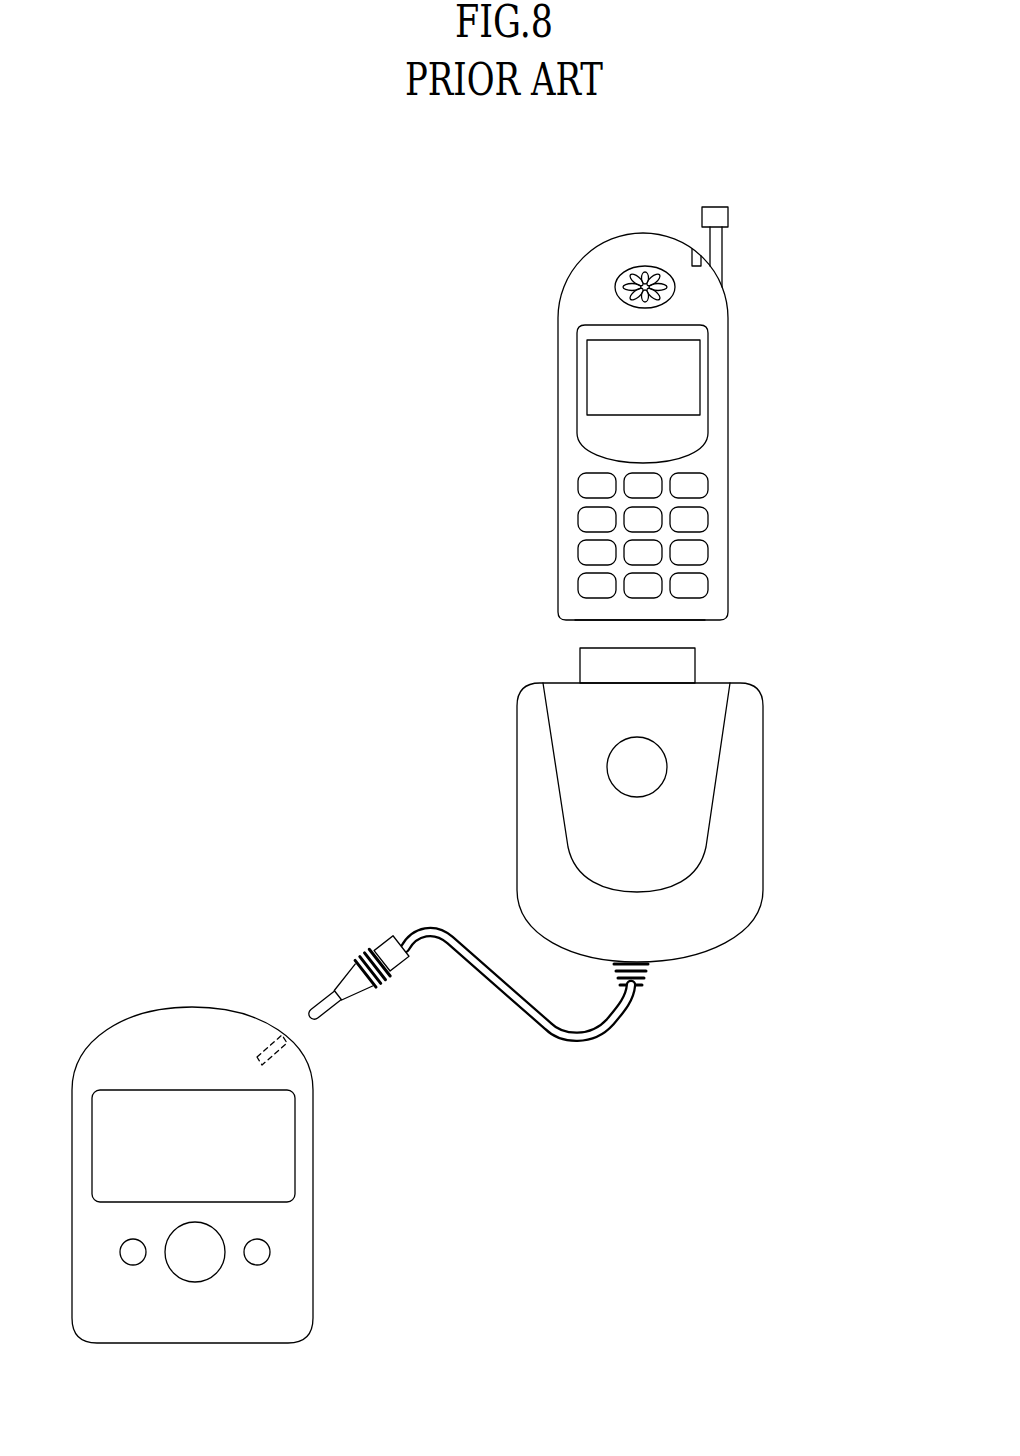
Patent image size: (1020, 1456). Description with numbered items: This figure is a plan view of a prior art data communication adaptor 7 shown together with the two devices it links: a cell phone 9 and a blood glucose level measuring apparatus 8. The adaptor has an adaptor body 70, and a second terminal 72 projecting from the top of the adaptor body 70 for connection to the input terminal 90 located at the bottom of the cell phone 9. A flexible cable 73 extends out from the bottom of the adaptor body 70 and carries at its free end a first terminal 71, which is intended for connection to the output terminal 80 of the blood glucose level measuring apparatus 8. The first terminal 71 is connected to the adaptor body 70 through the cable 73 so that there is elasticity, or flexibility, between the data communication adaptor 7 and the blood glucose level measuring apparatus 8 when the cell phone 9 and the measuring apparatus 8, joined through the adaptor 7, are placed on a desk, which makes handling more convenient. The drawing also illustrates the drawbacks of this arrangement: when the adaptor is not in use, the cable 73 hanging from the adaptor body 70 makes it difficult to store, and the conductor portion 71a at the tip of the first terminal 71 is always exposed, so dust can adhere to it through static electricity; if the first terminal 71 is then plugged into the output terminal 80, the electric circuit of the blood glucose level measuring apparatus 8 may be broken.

The cell phone 9 is at (733, 459).
The input terminal 90 is at (592, 622).
The data communication adaptor 7 is at (561, 867).
The adaptor body 70 is at (747, 810).
The second terminal 72 is at (687, 666).
The flexible cable 73 is at (542, 1027).
The first terminal 71 is at (357, 978).
The conductor portion 71a is at (324, 1006).
The blood glucose level measuring apparatus 8 is at (235, 1144).
The output terminal 80 is at (259, 1055).